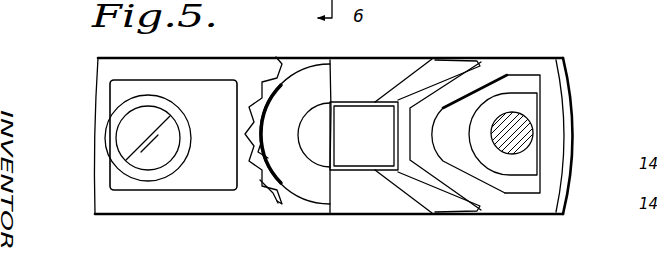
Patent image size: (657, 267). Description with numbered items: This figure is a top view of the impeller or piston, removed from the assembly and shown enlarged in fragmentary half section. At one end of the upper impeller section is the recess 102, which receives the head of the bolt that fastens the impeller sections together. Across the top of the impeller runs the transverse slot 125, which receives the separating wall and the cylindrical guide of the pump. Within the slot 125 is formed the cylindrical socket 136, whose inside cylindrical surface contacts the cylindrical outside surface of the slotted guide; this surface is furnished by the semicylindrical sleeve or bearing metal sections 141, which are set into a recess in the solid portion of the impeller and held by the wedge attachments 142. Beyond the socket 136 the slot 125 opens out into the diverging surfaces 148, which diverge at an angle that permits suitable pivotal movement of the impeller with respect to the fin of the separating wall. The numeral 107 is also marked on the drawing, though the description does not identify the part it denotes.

The recess 102 is at (117, 88).
The end cap 107 is at (575, 117).
The transverse slot 125 is at (302, 178).
The cylindrical socket 136 is at (262, 153).
The cylindrical insert of bearing metal 141 is at (272, 195).
The wedge attachments 142 is at (278, 58).
The diverging surfaces 148 is at (284, 79).